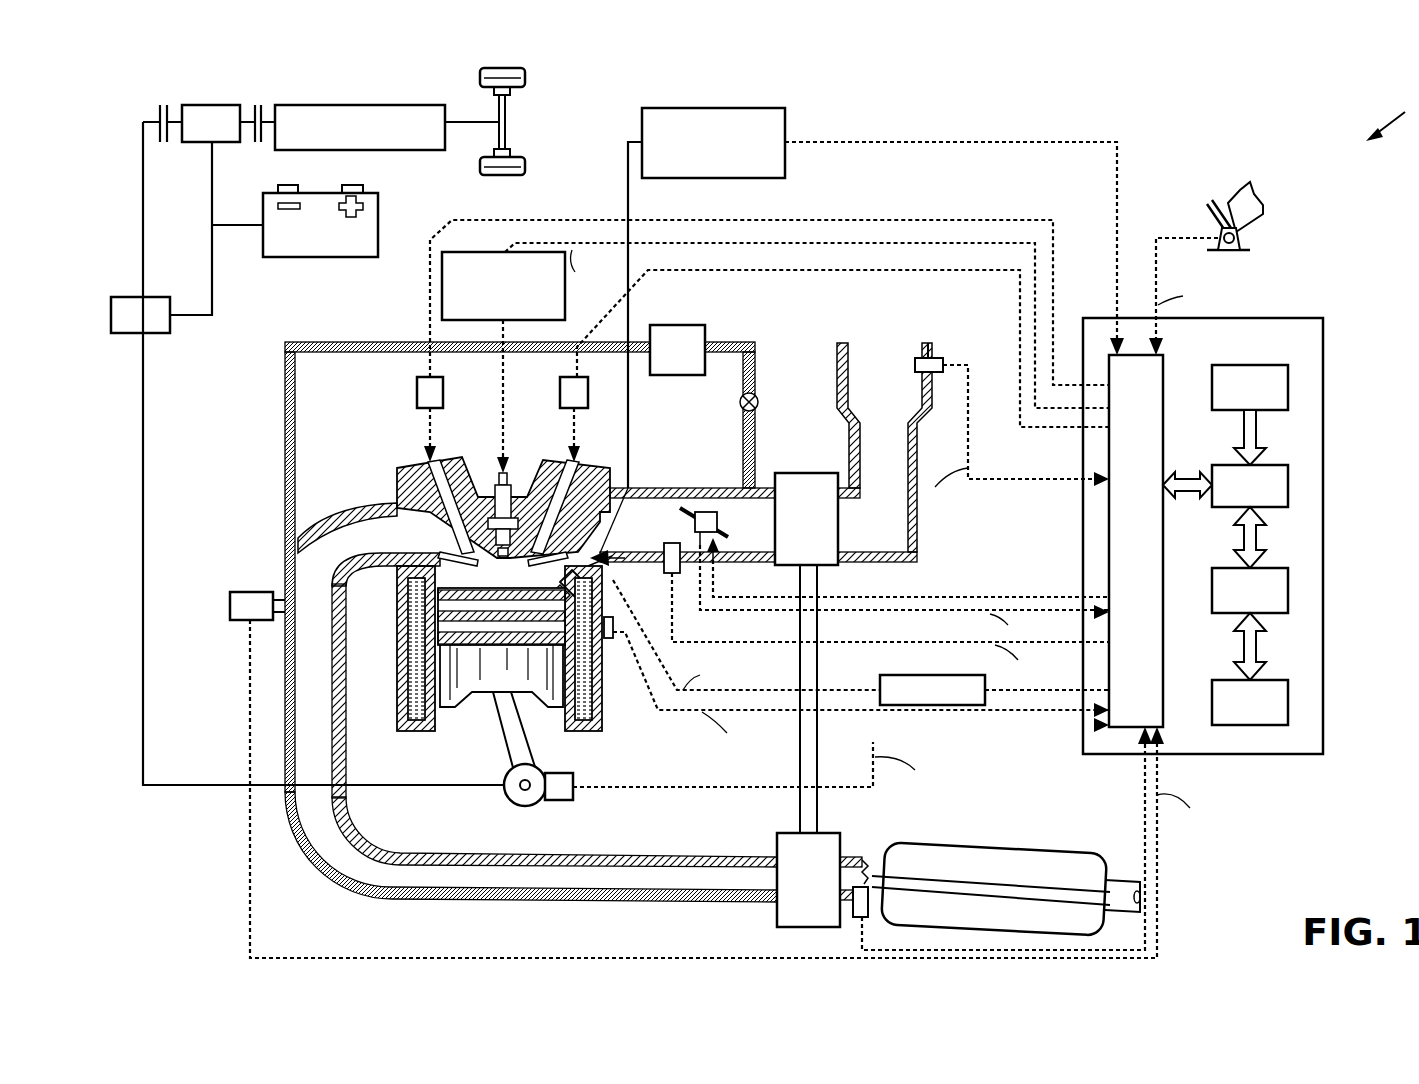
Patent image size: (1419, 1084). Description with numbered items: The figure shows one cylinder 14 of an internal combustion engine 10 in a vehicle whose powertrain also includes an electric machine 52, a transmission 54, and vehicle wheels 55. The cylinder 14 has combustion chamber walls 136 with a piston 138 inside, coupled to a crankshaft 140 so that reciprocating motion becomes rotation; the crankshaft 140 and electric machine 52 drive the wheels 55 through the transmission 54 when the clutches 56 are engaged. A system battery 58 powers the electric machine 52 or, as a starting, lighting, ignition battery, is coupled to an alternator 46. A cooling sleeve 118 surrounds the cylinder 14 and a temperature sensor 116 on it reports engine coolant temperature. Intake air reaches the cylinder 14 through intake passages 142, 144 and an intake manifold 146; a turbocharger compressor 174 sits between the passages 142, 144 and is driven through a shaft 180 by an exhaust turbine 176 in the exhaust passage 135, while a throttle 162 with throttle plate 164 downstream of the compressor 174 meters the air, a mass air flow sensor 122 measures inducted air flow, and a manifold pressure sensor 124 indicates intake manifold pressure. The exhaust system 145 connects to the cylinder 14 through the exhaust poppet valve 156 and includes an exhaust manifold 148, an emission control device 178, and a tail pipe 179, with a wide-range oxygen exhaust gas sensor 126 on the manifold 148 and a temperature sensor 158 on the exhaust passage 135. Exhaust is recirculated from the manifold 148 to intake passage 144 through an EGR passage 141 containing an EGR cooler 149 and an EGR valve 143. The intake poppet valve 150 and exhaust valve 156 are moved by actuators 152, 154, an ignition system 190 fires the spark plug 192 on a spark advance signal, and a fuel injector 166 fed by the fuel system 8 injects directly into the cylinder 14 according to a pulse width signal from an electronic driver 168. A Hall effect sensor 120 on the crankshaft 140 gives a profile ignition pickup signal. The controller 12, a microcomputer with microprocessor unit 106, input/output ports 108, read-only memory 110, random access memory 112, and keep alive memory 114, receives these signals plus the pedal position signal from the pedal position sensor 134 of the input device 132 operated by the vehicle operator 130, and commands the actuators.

The fuel system 8 is at (748, 108).
The internal combustion engine 10 is at (373, 416).
The controller 12 is at (1323, 320).
The cylinder 14 is at (410, 580).
The alternator 46 is at (111, 330).
The electric machine 52 is at (200, 105).
The transmission 54 is at (420, 150).
The vehicle wheel 55 is at (480, 75).
The clutch 56 is at (160, 110).
The system battery 58 is at (315, 257).
The microprocessor unit 106 is at (1290, 480).
The input/output ports 108 is at (1165, 362).
The read-only memory chip 110 is at (1290, 383).
The random access memory 112 is at (1290, 598).
The keep alive memory 114 is at (1290, 705).
The temperature sensor 116 is at (612, 642).
The cooling sleeve 118 is at (602, 700).
The Hall effect sensor 120 is at (565, 800).
The mass air flow sensor 122 is at (940, 358).
The MAP sensor 124 is at (672, 575).
The exhaust gas sensor 126 is at (230, 598).
The vehicle operator 130 is at (1262, 200).
The input device 132 is at (1210, 212).
The pedal position sensor 134 is at (1240, 238).
The exhaust passage 135 is at (685, 857).
The combustion chamber walls 136 is at (440, 725).
The piston 138 is at (503, 675).
The crankshaft 140 is at (515, 805).
The EGR passage 141 is at (738, 347).
The intake passage 142 is at (884, 447).
The EGR valve 143 is at (758, 408).
The intake passage 144 is at (752, 523).
The exhaust system 145 is at (252, 526).
The intake manifold 146 is at (687, 525).
The exhaust manifold 148 is at (369, 544).
The EGR cooler 149 is at (677, 350).
The intake poppet valve 150 is at (540, 525).
The actuator 152 is at (560, 395).
The actuator 154 is at (417, 393).
The exhaust poppet valve 156 is at (435, 518).
The temperature sensor 158 is at (858, 920).
The throttle 162 is at (708, 520).
The throttle plate 164 is at (690, 515).
The fuel injector 166 is at (565, 568).
The electronic driver 168 is at (888, 675).
The compressor 174 is at (846, 519).
The exhaust turbine 176 is at (822, 880).
The emission control device 178 is at (1010, 858).
The exhaust tail pipe 179 is at (1125, 888).
The shaft 180 is at (800, 815).
The ignition system 190 is at (458, 252).
The spark plug 192 is at (500, 510).